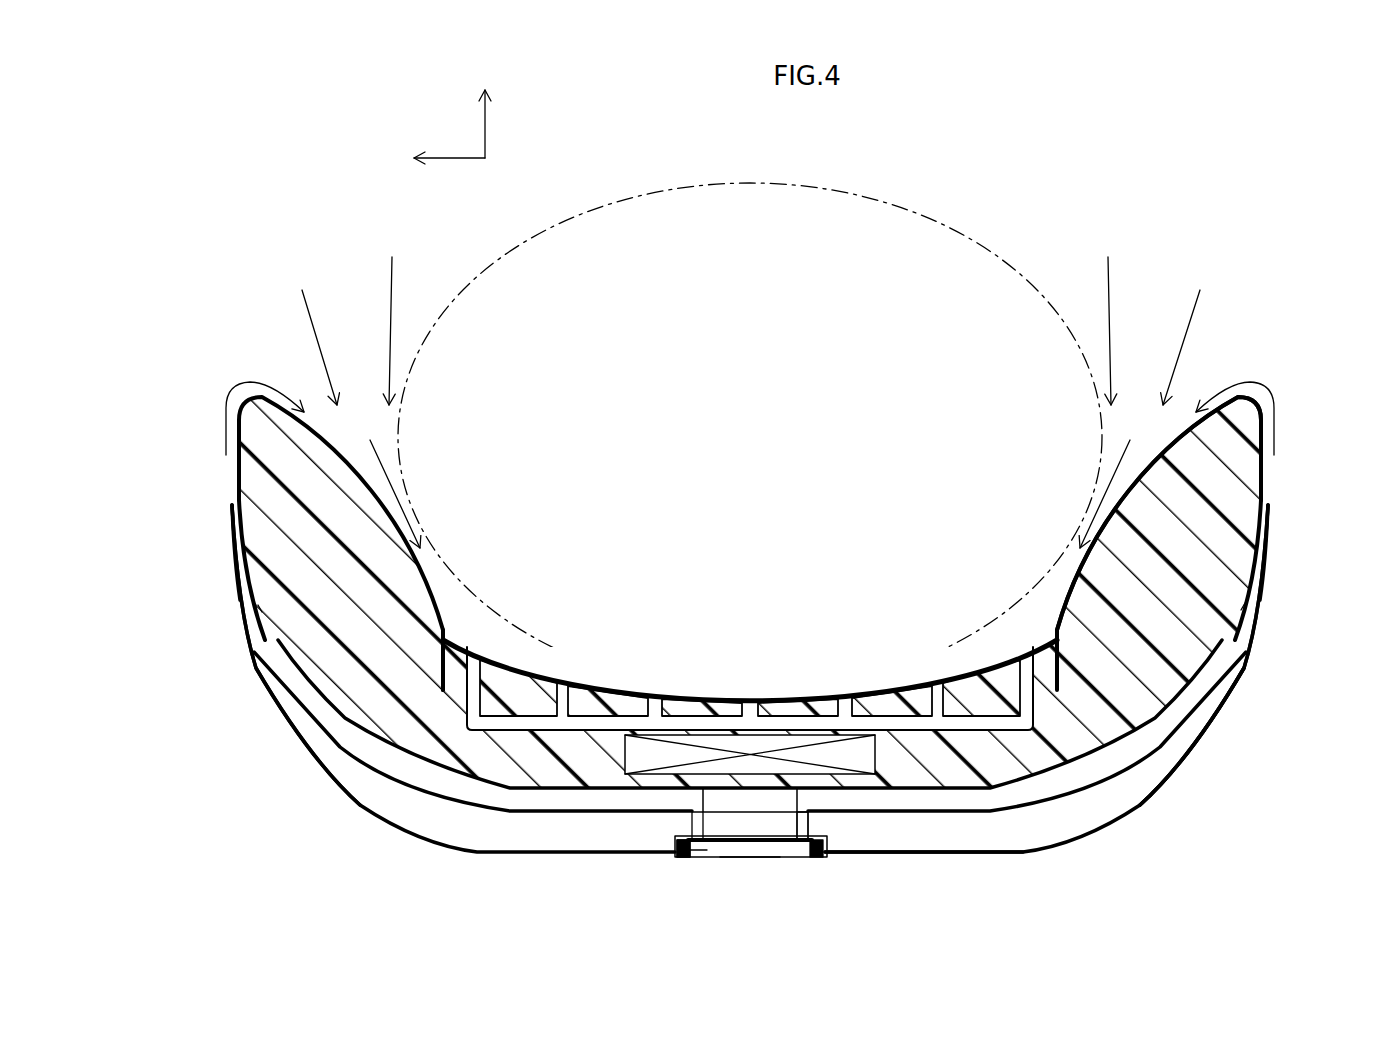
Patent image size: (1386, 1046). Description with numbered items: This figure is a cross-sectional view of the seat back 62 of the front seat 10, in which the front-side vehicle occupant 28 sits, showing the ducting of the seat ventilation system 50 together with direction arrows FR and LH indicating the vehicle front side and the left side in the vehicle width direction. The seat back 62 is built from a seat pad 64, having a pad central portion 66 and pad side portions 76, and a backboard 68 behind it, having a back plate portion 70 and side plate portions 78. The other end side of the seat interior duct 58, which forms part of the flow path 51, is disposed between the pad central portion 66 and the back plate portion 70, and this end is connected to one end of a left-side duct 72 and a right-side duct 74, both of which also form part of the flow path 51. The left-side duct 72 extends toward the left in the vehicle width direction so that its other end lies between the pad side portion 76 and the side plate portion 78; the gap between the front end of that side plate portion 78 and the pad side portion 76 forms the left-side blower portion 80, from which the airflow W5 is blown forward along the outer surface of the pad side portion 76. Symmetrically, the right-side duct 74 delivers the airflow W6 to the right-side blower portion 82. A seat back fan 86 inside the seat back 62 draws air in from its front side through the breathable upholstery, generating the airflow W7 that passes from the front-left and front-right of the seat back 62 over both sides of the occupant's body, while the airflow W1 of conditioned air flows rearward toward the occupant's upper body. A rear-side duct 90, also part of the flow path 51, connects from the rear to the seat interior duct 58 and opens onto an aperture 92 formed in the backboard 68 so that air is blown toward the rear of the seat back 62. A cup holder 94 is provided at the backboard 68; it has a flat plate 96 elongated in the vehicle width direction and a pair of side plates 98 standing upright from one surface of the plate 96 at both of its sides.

The front seat 10 is at (1268, 245).
The front-side vehicle occupant 28 is at (949, 230).
The seat ventilation system 50 is at (1130, 783).
The flow path 51 is at (812, 825).
The seat interior duct 58 is at (786, 797).
The seat back 62 is at (476, 615).
The seat pad 64 is at (1137, 713).
The pad central portion 66 is at (905, 778).
The backboard 68 is at (1197, 773).
The back plate portion 70 is at (970, 856).
The left-side duct 72 is at (512, 815).
The right-side duct 74 is at (1077, 797).
The pad side portion 76 is at (250, 472).
The side plate portion 78 is at (223, 567).
The left-side blower portion 80 is at (233, 517).
The right-side blower portion 82 is at (1270, 517).
The seat back fan 86 is at (748, 732).
The rear-side duct 90 is at (688, 822).
The aperture 92 is at (689, 856).
The cup holder 94 is at (747, 872).
The plate 96 is at (777, 858).
The side plates 98 is at (703, 853).
The airflow W1 is at (310, 310).
The airflow W5 is at (225, 415).
The airflow W6 is at (1275, 415).
The airflow W7 is at (392, 463).
The front direction FR is at (486, 125).
The left direction LH is at (455, 158).